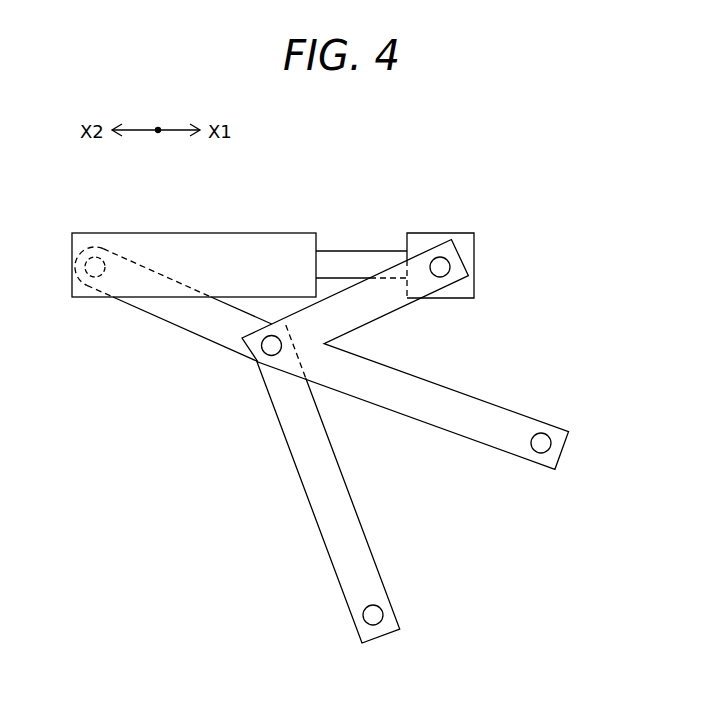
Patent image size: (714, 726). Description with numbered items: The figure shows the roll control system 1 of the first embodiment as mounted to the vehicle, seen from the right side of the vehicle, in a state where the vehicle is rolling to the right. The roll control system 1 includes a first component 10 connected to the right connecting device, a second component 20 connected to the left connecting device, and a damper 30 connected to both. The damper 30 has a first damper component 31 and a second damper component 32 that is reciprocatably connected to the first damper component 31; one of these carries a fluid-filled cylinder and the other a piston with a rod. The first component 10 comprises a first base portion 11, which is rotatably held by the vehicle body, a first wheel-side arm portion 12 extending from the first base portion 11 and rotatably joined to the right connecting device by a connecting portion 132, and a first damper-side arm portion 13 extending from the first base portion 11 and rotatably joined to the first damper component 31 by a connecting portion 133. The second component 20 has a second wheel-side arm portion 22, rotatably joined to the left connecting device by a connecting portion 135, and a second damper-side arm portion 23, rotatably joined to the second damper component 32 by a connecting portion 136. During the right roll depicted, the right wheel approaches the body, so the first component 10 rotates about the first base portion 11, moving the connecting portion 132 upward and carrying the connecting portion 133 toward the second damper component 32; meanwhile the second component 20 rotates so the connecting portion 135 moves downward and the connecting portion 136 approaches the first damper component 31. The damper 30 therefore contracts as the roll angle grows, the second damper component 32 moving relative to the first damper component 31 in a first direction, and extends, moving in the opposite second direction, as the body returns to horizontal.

The roll control system 1 is at (278, 180).
The first component 10 is at (487, 447).
The first base portion 11 is at (245, 340).
The first wheel-side arm portion 12 is at (437, 413).
The first damper-side arm portion 13 is at (370, 307).
The connecting portion 132 is at (541, 443).
The connecting portion 133 is at (445, 266).
The connecting portion 135 is at (372, 617).
The connecting portion 136 is at (100, 252).
The second component 20 is at (310, 533).
The second wheel-side arm portion 22 is at (315, 477).
The second damper-side arm portion 23 is at (203, 323).
The damper 30 is at (465, 223).
The first damper component 31 is at (474, 298).
The second damper component 32 is at (72, 299).